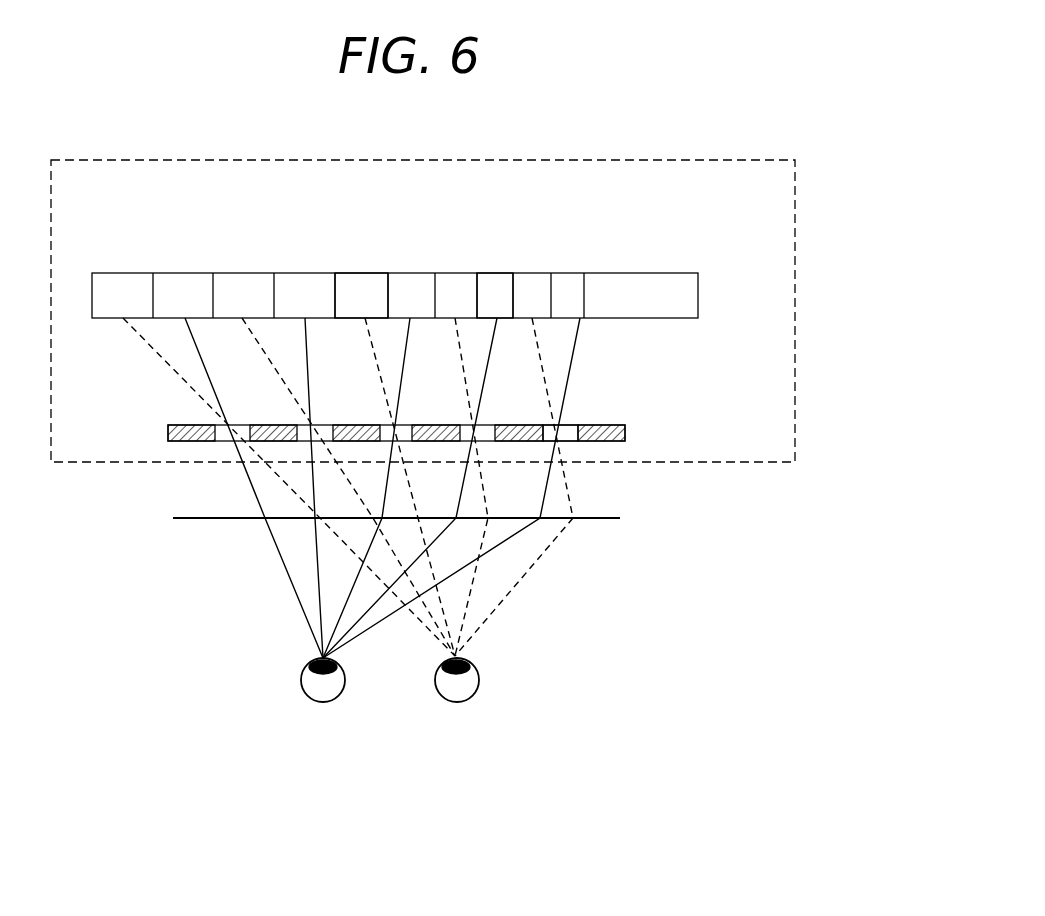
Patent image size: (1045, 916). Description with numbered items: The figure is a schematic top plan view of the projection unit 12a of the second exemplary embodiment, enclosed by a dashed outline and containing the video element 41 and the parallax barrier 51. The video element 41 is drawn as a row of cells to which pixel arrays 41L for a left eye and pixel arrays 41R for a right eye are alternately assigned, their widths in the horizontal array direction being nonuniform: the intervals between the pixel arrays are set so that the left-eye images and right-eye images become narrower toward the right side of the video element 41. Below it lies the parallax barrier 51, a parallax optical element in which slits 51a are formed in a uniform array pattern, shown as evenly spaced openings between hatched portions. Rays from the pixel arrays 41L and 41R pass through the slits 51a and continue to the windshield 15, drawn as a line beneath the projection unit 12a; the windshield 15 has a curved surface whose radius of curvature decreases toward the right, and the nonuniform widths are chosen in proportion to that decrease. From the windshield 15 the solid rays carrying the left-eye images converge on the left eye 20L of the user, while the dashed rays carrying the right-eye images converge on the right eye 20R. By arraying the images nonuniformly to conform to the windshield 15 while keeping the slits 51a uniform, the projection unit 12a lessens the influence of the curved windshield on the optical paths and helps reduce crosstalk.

The projection unit 12a is at (710, 160).
The video element 41 is at (697, 272).
The pixel arrays for a right eye 41R is at (376, 282).
The pixel arrays for a left eye 41L is at (495, 280).
The parallax barrier 51 is at (625, 433).
The slits 51a is at (573, 425).
The windshield 15 is at (602, 519).
The left eye 20L is at (323, 702).
The right eye 20R is at (457, 702).